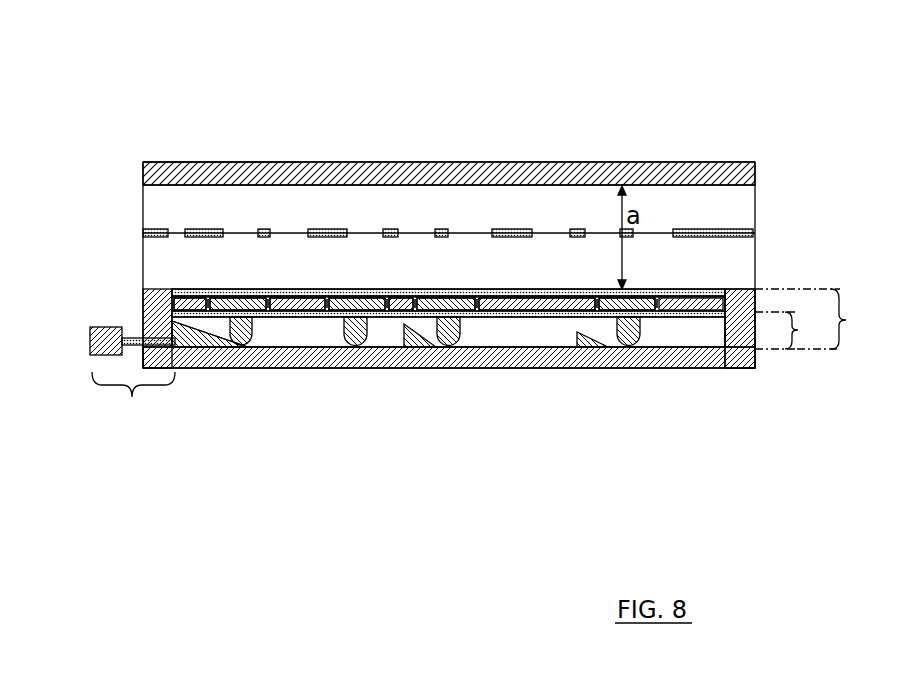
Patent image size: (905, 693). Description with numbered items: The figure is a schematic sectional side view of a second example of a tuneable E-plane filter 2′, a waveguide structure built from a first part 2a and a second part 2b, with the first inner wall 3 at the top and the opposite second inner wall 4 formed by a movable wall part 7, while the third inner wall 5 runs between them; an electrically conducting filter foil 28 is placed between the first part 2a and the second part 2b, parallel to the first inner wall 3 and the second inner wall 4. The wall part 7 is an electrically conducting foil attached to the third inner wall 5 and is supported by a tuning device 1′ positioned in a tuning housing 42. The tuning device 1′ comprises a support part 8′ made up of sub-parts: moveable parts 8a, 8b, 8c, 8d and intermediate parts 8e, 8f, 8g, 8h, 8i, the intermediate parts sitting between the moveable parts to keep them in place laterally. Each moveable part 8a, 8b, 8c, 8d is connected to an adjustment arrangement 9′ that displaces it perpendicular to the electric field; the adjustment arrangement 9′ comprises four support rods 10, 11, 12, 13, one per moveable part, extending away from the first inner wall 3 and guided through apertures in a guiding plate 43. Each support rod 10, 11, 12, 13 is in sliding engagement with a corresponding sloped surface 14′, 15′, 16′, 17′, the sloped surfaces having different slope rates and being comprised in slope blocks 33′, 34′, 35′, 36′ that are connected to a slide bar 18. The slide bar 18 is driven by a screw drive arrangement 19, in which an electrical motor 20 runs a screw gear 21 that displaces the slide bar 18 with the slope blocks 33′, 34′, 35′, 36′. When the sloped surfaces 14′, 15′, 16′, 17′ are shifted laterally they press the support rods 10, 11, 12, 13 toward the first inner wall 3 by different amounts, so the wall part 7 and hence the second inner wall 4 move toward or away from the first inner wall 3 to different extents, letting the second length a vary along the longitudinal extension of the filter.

The tuning device 1′ is at (813, 319).
The E-plane filter 2′ is at (140, 81).
The first part 2a is at (311, 281).
The second part 2b is at (318, 200).
The first inner wall 3 is at (735, 190).
The second inner wall 4 is at (230, 162).
The third inner wall 5 is at (553, 243).
The wall part 7 is at (240, 287).
The support part 8′ is at (160, 302).
The moveable part 8a is at (300, 357).
The moveable part 8b is at (362, 290).
The moveable part 8c is at (470, 314).
The moveable part 8d is at (634, 312).
The intermediate part 8e is at (160, 290).
The intermediate part 8f is at (287, 263).
The intermediate part 8g is at (405, 290).
The intermediate part 8h is at (508, 290).
The intermediate part 8i is at (700, 288).
The adjustment arrangement 9′ is at (790, 330).
The support rod 10 is at (262, 340).
The support rod 11 is at (402, 333).
The support rod 12 is at (460, 323).
The support rod 13 is at (680, 350).
The sloped surface 14′ is at (203, 290).
The sloped surface 15′ is at (343, 290).
The sloped surface 16′ is at (432, 290).
The sloped surface 17′ is at (603, 324).
The slide bar 18 is at (312, 338).
The screw drive arrangement 19 is at (133, 405).
The electrical motor 20 is at (90, 350).
The screw gear 21 is at (172, 346).
The filter foil 28 is at (700, 233).
The slope block 33′ is at (205, 343).
The slope block 34′ is at (352, 346).
The slope block 35′ is at (450, 348).
The slope block 36′ is at (630, 347).
The tuning housing 42 is at (578, 335).
The guiding plate 43 is at (738, 352).